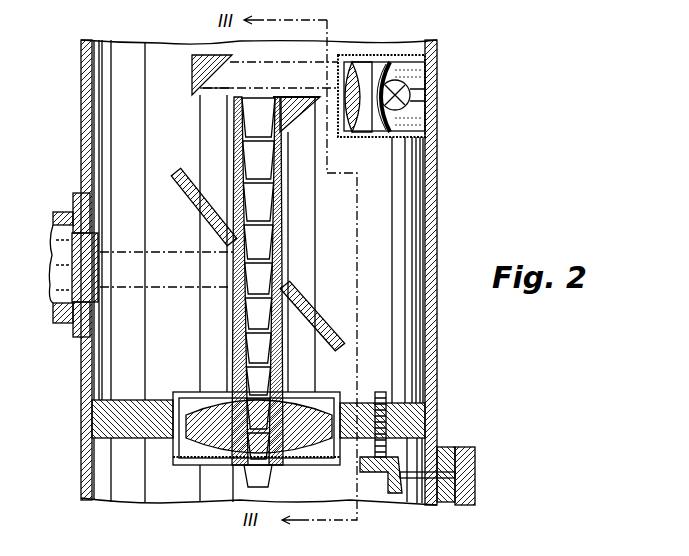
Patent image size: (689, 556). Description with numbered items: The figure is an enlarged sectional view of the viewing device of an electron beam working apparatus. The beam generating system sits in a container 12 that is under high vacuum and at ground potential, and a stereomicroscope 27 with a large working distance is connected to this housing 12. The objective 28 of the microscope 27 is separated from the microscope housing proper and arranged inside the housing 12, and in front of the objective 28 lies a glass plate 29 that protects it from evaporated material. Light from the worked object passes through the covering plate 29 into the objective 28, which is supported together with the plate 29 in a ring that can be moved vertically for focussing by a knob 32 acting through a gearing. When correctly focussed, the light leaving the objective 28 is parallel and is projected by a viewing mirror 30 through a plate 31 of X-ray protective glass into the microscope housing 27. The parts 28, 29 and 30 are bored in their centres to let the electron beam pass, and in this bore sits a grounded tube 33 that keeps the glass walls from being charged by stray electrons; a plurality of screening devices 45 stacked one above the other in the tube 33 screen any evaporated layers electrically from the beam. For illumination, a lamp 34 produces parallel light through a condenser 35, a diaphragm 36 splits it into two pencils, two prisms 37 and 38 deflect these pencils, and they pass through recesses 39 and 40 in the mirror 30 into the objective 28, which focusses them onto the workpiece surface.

The container 12 is at (82, 148).
The stereomicroscope 27 is at (68, 323).
The objective 28 is at (325, 403).
The glass plate 29 is at (198, 453).
The viewing mirror 30 is at (337, 333).
The plate of X-ray protective glass 31 is at (92, 258).
The knob 32 is at (467, 447).
The grounded tube 33 is at (283, 193).
The lamp 34 is at (412, 95).
The condenser 35 is at (372, 68).
The diaphragm 36 is at (341, 97).
The prism 37 is at (192, 70).
The prism 38 is at (290, 92).
The recess of the mirror 39 is at (300, 300).
The recess of the mirror 40 is at (213, 220).
The screening devices 45 is at (240, 347).